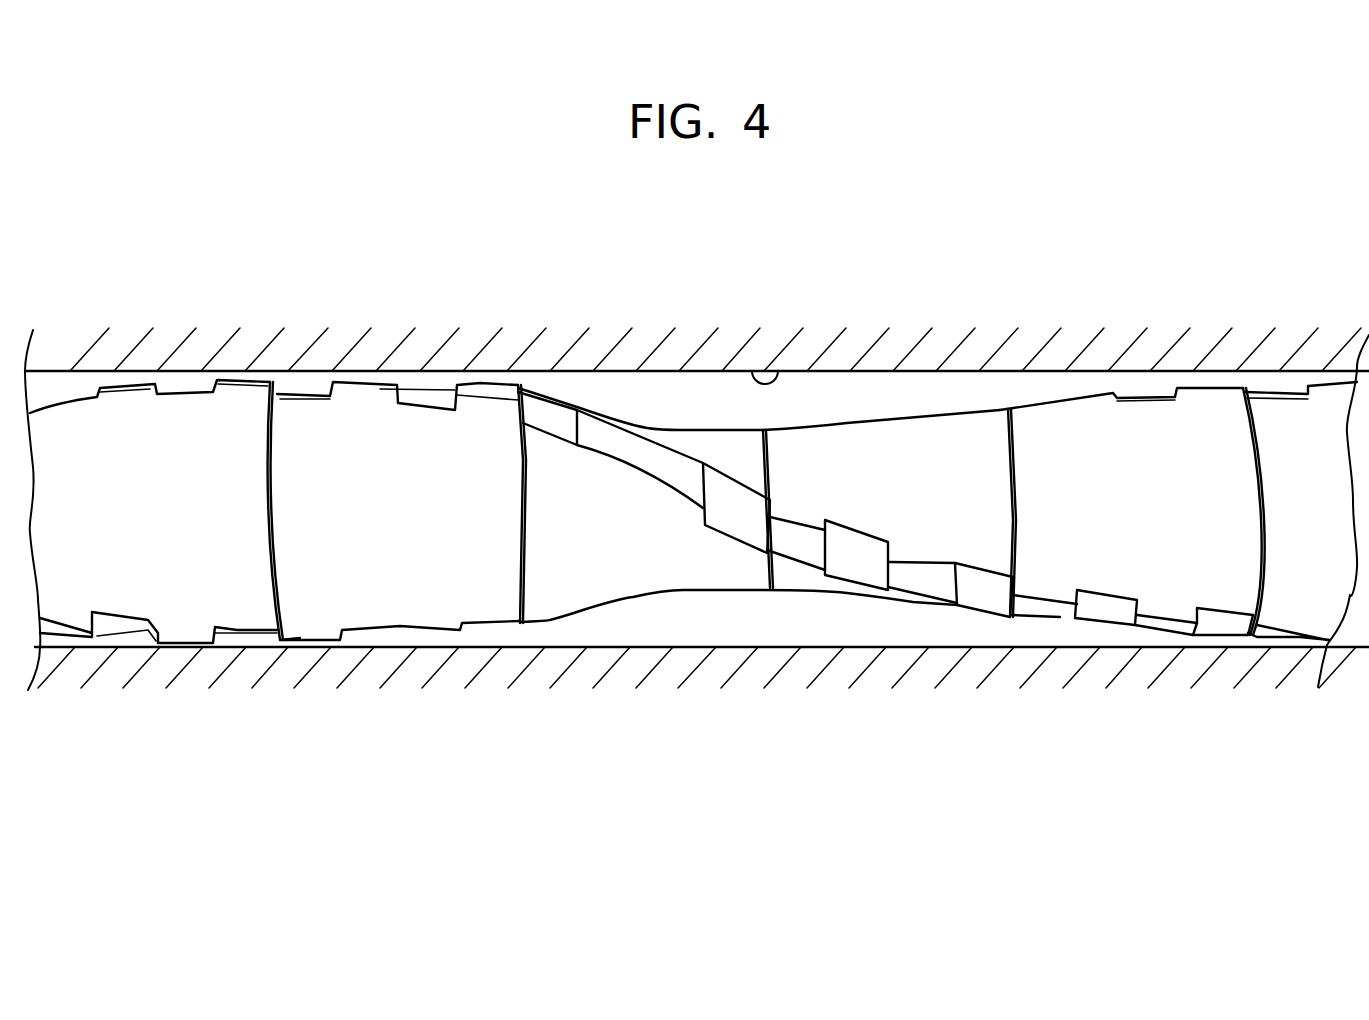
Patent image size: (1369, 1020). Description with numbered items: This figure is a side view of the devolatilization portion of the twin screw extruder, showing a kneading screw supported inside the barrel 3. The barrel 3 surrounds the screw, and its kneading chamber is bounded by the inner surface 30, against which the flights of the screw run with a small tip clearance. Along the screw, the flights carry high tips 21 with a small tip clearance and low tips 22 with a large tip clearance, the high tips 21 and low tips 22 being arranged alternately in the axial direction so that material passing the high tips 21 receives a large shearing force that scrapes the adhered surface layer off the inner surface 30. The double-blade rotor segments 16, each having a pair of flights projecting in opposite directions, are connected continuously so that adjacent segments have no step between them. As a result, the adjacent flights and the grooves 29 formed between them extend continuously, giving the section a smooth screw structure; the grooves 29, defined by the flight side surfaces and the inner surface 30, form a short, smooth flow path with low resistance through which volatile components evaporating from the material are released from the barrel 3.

The barrel 3 is at (638, 352).
The double-blade rotor segment 16 is at (375, 531).
The high tip 21 is at (650, 462).
The low tip 22 is at (750, 547).
The groove 29 is at (808, 503).
The inner surface 30 is at (776, 368).